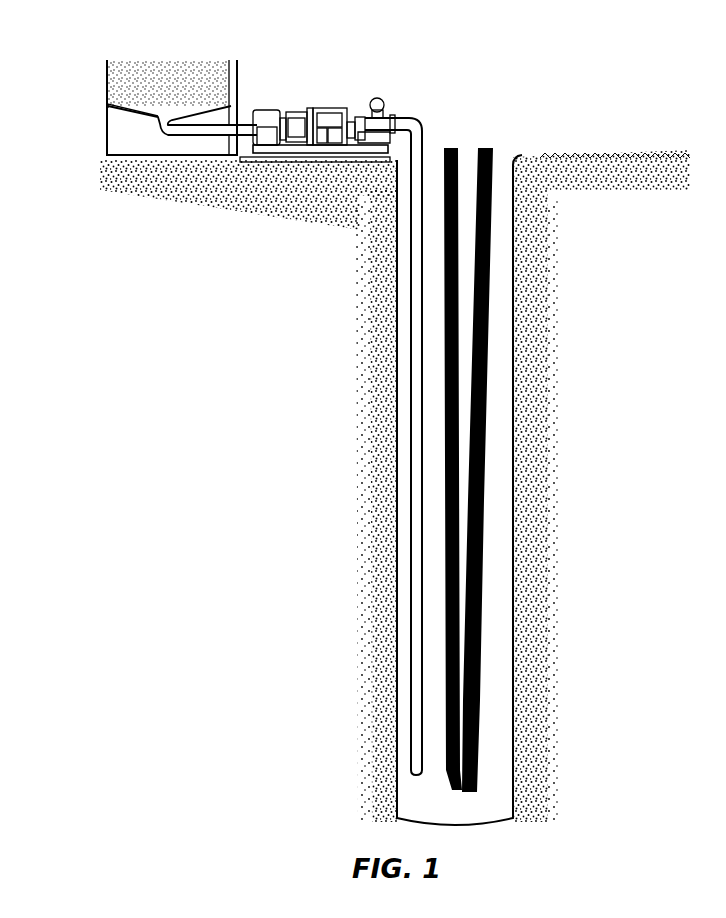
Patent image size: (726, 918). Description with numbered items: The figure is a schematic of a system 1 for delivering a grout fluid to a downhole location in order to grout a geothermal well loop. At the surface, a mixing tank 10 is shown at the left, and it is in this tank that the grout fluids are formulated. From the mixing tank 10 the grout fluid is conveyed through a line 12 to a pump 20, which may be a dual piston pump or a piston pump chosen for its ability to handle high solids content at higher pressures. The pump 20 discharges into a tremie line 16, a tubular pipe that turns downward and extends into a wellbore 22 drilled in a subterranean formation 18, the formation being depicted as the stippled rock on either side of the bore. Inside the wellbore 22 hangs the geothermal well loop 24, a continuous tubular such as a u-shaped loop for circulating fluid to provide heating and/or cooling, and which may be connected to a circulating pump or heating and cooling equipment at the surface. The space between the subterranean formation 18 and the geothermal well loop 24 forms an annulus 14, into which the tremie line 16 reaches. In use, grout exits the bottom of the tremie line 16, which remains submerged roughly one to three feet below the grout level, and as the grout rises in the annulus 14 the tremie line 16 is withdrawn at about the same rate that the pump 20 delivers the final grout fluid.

The system 1 is at (310, 37).
The mixing tank 10 is at (131, 58).
The line 12 is at (246, 123).
The annulus 14 is at (507, 408).
The tremie line 16 is at (403, 116).
The subterranean formation 18 is at (302, 446).
The pump 20 is at (329, 108).
The wellbore 22 is at (520, 498).
The geothermal well loop 24 is at (486, 146).